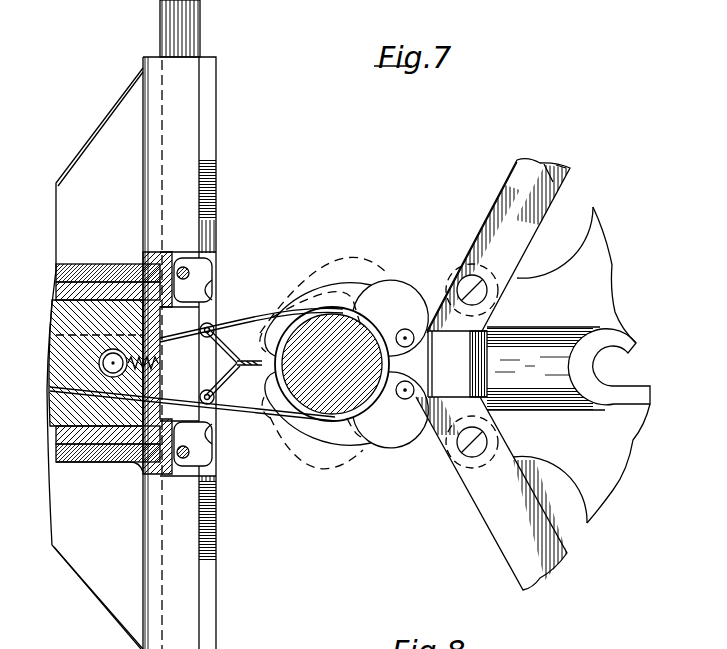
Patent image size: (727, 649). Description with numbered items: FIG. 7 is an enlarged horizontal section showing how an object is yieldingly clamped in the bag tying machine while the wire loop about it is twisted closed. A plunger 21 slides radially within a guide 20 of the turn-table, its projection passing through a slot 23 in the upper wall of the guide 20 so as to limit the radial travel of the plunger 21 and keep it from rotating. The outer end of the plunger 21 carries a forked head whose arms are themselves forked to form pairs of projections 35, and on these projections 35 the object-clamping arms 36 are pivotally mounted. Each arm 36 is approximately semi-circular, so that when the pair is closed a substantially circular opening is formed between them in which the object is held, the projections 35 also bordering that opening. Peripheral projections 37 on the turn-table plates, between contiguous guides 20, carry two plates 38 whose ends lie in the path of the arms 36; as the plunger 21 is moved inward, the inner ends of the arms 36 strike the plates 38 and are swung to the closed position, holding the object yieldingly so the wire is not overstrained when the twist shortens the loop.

The guide 20 is at (548, 332).
The plunger 21 is at (460, 373).
The slot 23 is at (610, 388).
The projections 35 is at (388, 284).
The object-clamping arms 36 is at (314, 306).
The peripheral projections 37 is at (488, 296).
The plates 38 is at (527, 238).